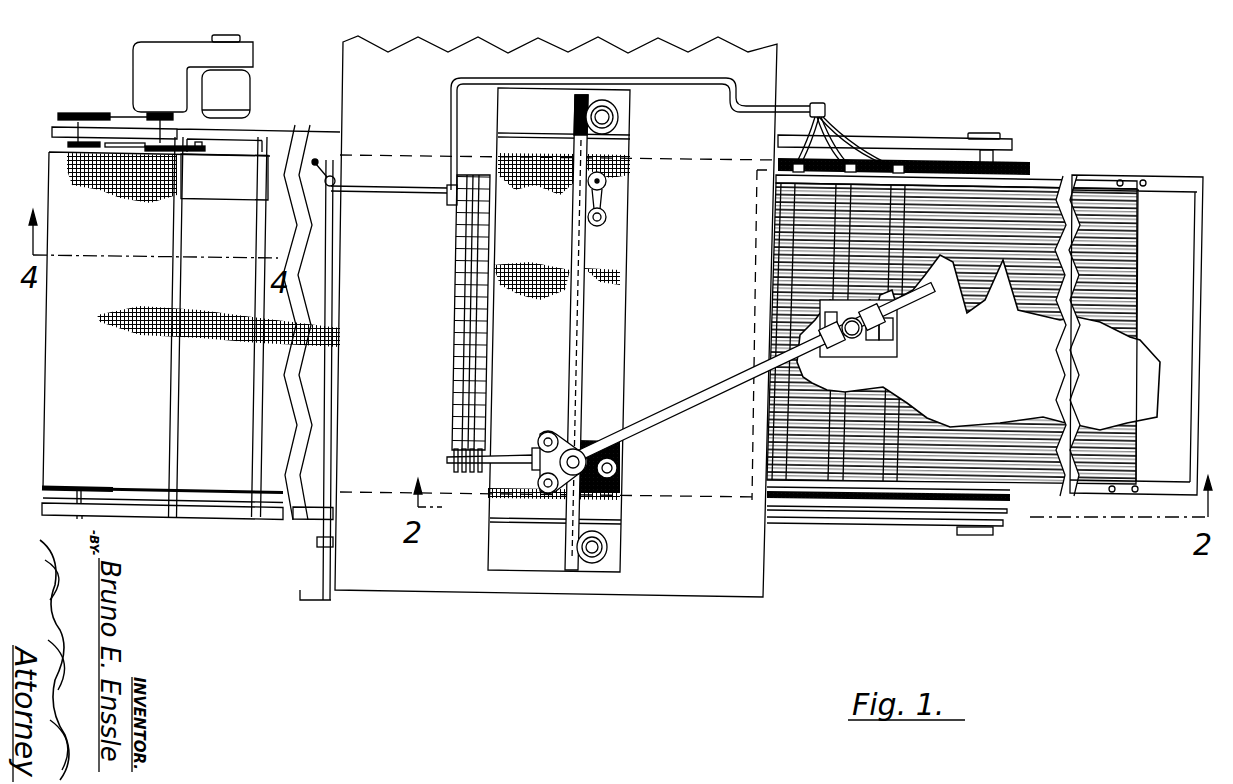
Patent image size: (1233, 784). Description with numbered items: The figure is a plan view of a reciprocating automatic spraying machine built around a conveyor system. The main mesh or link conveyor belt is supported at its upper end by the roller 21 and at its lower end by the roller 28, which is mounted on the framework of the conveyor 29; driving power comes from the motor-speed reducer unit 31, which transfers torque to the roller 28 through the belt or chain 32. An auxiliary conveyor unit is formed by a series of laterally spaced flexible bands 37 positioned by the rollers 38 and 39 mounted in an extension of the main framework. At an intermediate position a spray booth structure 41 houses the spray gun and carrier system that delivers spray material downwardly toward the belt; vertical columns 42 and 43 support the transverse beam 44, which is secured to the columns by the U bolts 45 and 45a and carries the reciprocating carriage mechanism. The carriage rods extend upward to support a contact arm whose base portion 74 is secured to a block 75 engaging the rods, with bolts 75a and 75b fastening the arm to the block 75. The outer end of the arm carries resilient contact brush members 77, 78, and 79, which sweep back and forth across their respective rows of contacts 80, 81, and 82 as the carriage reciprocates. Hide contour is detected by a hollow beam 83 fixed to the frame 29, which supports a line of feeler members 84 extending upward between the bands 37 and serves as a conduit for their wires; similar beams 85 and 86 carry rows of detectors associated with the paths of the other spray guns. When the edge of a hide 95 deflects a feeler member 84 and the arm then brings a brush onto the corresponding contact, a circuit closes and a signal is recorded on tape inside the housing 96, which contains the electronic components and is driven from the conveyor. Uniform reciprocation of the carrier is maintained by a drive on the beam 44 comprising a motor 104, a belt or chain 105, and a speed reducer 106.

The roller 21 is at (940, 503).
The roller 28 is at (103, 490).
The framework of the conveyor 29 is at (913, 140).
The motor-speed reducer unit 31 is at (137, 75).
The belt or chain 32 is at (130, 115).
The flexible bands 37 is at (1120, 237).
The roller 38 is at (1140, 203).
The roller 39 is at (757, 193).
The spray booth structure 41 is at (763, 573).
The vertical column 42 is at (603, 551).
The vertical column 43 is at (619, 119).
The beam 44 is at (583, 345).
The U bolt 45 is at (618, 104).
The U bolt 45a is at (612, 534).
The base portion 74 is at (517, 457).
The block 75 is at (737, 388).
The bolt 75a is at (533, 433).
The bolt 75b is at (535, 509).
The resilient contact brush member 77 is at (448, 461).
The resilient contact brush member 78 is at (468, 472).
The resilient contact brush member 79 is at (478, 472).
The row of contacts 80 is at (458, 282).
The row of contacts 81 is at (473, 322).
The row of contacts 82 is at (482, 352).
The hollow beam 83 is at (787, 310).
The feeler members 84 is at (773, 277).
The beam 85 is at (767, 415).
The beam 86 is at (822, 443).
The hide 95 is at (978, 342).
The housing 96 is at (215, 182).
The motor 104 is at (607, 221).
The belt or chain 105 is at (607, 201).
The speed reducer 106 is at (607, 181).